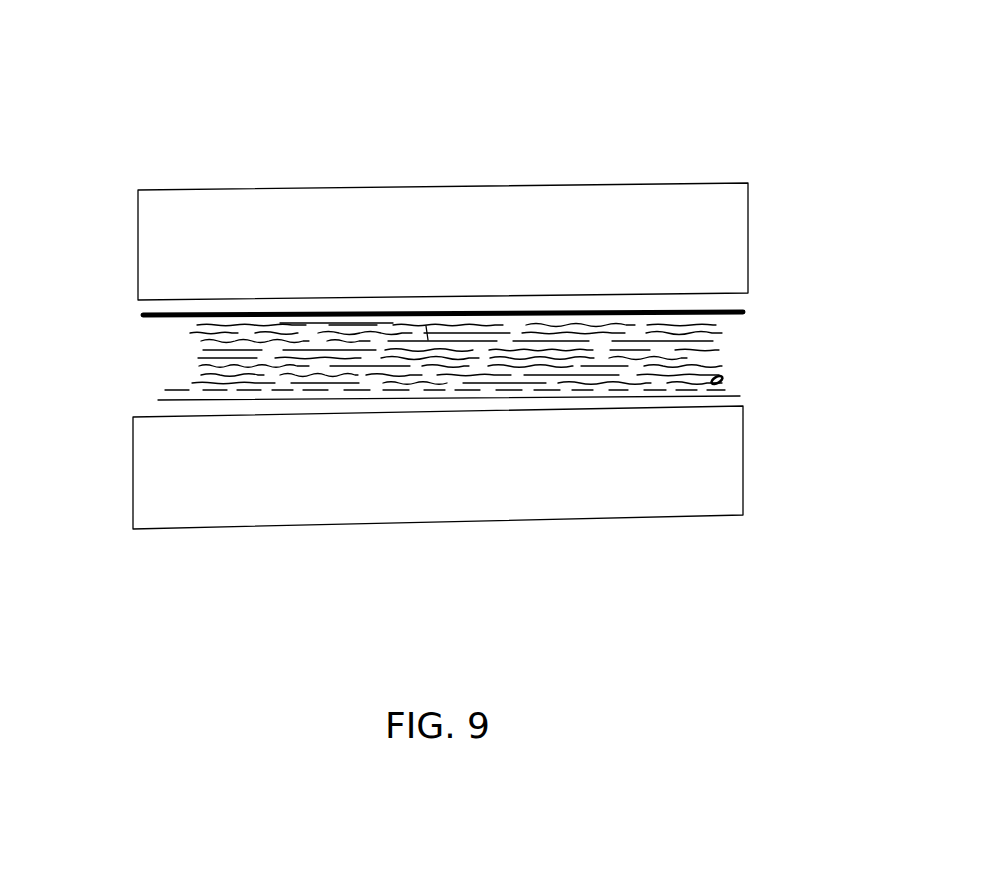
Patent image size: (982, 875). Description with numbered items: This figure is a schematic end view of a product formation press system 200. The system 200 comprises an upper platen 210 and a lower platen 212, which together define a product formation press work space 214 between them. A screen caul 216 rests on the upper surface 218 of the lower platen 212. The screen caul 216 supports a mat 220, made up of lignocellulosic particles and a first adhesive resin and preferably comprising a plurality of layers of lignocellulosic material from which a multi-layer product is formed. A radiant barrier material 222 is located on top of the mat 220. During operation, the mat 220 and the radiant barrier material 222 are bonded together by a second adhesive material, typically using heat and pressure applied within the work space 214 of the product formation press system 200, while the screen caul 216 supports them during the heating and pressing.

The product formation press system 200 is at (672, 130).
The upper platen 210 is at (748, 228).
The lower platen 212 is at (743, 450).
The product formation press work space 214 is at (762, 361).
The screen caul 216 is at (643, 388).
The upper surface 218 is at (400, 412).
The mat 220 is at (195, 362).
The radiant barrier material 222 is at (743, 312).